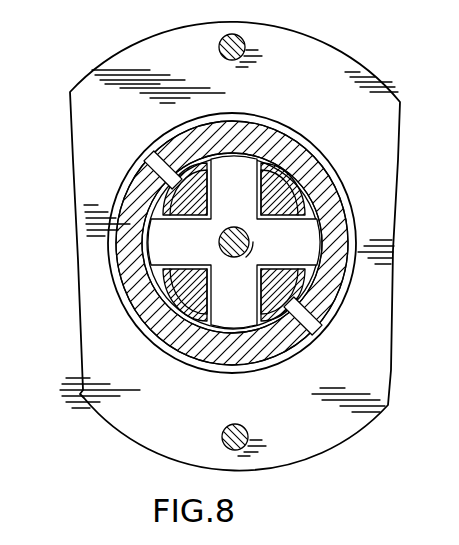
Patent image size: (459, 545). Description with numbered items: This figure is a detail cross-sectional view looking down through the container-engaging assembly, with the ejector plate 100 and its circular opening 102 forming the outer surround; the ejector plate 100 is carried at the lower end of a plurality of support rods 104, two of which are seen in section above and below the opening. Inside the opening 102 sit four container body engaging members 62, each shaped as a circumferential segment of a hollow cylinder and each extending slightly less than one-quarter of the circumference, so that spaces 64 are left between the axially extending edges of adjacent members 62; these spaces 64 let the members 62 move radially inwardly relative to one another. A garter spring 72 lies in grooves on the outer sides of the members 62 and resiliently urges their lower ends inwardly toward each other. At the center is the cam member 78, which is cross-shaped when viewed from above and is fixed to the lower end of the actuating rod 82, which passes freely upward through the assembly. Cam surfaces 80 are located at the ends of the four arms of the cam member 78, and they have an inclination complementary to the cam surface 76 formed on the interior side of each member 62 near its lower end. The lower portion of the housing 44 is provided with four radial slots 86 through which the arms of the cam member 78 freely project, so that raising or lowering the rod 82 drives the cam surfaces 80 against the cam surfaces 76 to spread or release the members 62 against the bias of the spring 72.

The housing 44 is at (162, 191).
The container body engaging members 62 is at (343, 212).
The spaces 64 is at (176, 156).
The garter spring 72 is at (288, 142).
The cam surface 76 is at (200, 162).
The cam member 78 is at (251, 293).
The cam surfaces 80 is at (150, 230).
The actuating rod 82 is at (249, 250).
The radial slots 86 is at (328, 205).
The ejector plate 100 is at (339, 425).
The circular opening 102 is at (258, 371).
The support rods 104 is at (244, 53).